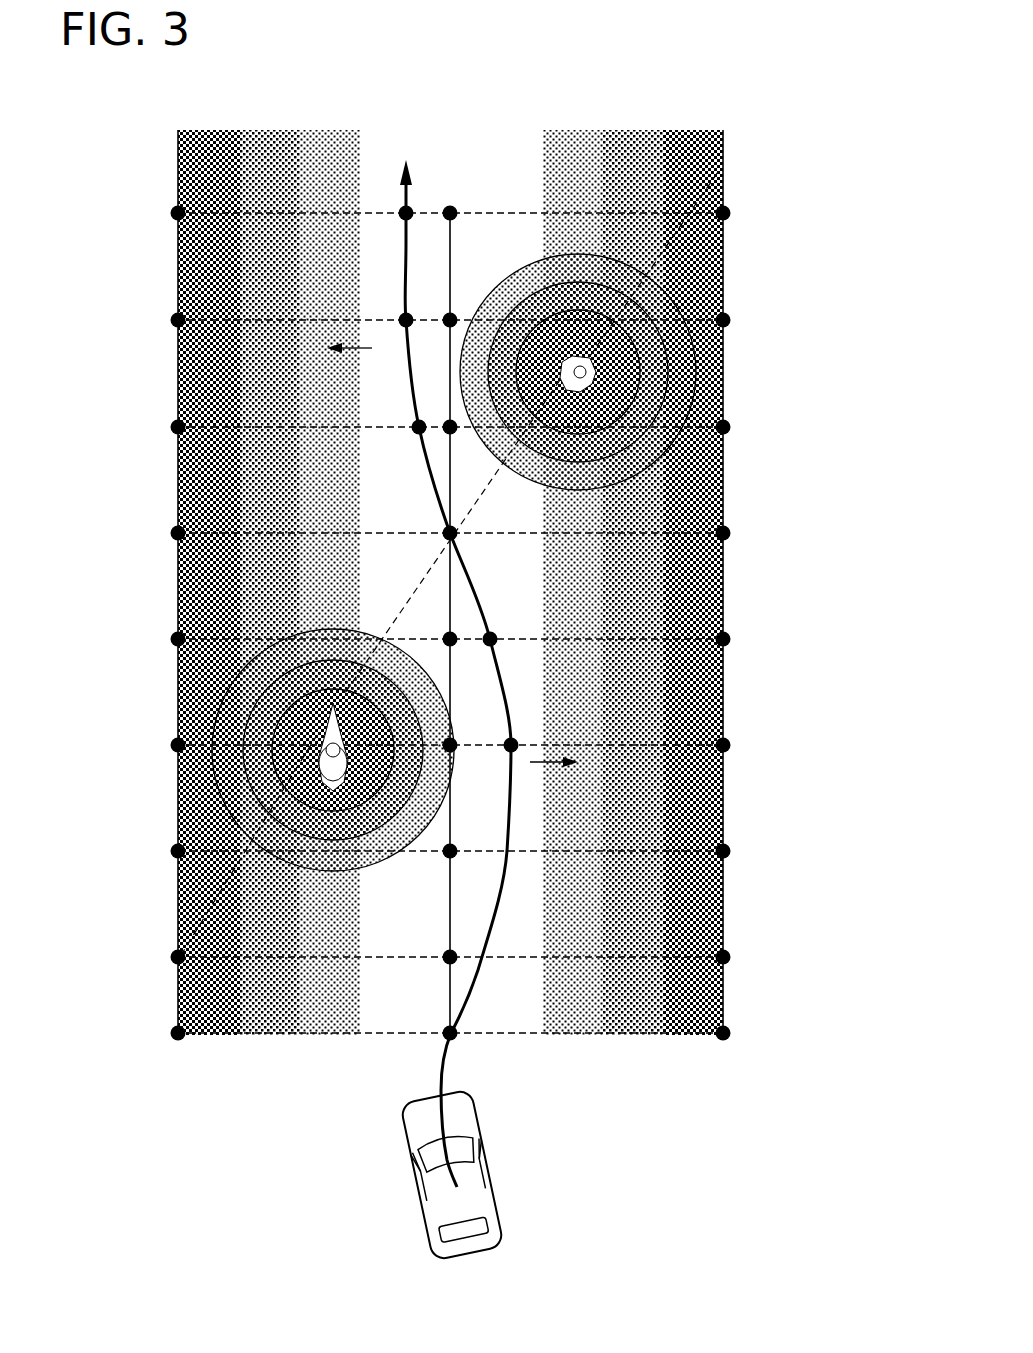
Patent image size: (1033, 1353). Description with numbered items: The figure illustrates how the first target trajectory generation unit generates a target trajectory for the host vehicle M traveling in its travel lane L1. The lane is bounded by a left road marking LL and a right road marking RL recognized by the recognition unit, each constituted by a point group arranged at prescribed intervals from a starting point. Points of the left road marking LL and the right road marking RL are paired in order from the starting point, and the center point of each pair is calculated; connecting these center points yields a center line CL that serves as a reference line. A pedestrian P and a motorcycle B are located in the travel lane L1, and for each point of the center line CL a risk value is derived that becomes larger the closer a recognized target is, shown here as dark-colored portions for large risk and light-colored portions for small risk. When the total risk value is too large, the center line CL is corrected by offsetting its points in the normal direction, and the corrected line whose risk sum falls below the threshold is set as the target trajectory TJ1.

The travel lane L1 is at (465, 94).
The left road marking LL is at (177, 152).
The right road marking RL is at (723, 152).
The center line CL is at (448, 908).
The target trajectory TJ1 is at (404, 268).
The pedestrian P is at (594, 366).
The motorcycle B is at (325, 712).
The host vehicle M is at (485, 1160).